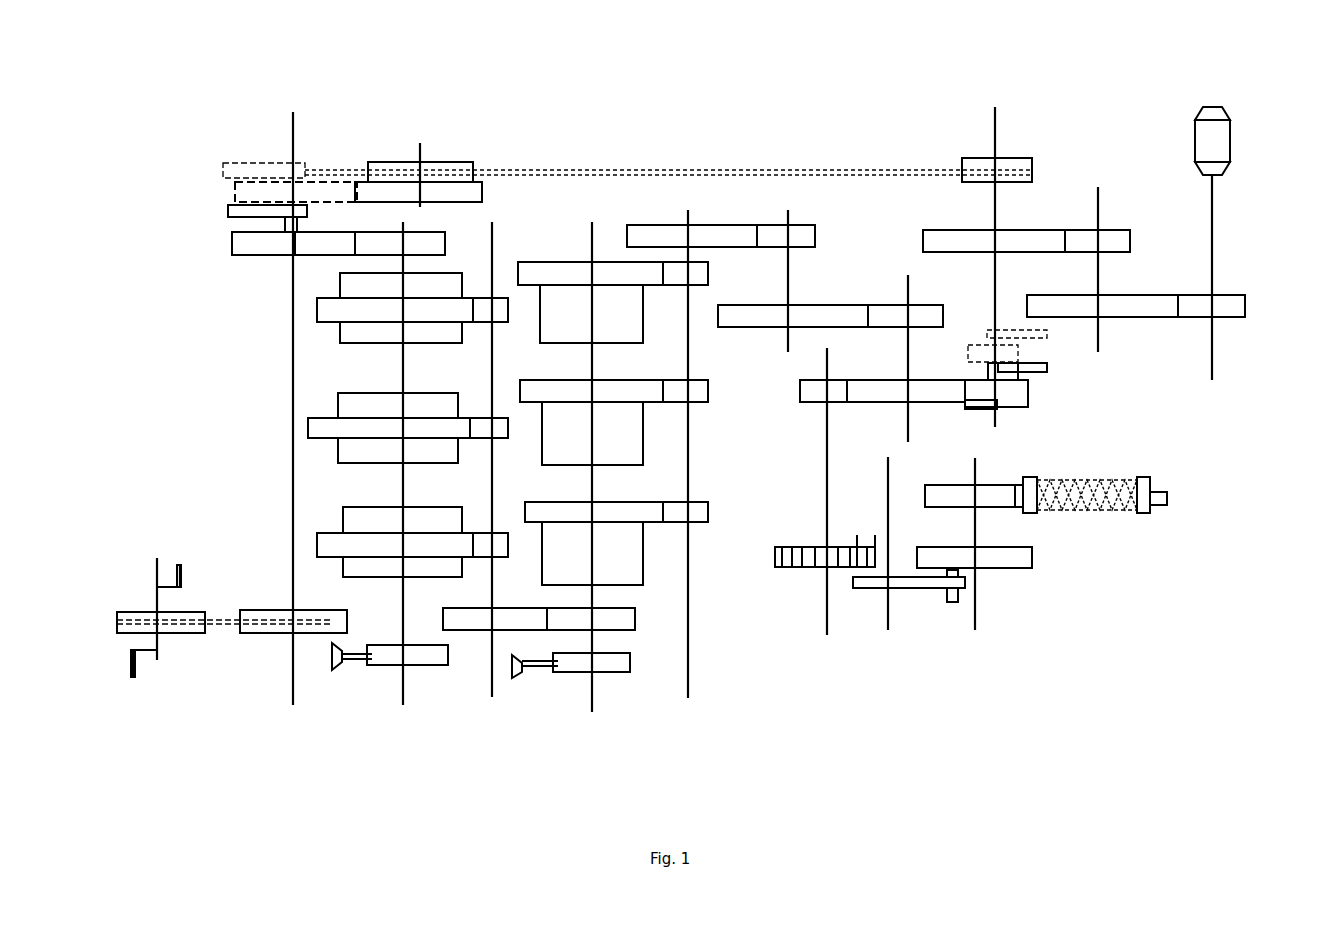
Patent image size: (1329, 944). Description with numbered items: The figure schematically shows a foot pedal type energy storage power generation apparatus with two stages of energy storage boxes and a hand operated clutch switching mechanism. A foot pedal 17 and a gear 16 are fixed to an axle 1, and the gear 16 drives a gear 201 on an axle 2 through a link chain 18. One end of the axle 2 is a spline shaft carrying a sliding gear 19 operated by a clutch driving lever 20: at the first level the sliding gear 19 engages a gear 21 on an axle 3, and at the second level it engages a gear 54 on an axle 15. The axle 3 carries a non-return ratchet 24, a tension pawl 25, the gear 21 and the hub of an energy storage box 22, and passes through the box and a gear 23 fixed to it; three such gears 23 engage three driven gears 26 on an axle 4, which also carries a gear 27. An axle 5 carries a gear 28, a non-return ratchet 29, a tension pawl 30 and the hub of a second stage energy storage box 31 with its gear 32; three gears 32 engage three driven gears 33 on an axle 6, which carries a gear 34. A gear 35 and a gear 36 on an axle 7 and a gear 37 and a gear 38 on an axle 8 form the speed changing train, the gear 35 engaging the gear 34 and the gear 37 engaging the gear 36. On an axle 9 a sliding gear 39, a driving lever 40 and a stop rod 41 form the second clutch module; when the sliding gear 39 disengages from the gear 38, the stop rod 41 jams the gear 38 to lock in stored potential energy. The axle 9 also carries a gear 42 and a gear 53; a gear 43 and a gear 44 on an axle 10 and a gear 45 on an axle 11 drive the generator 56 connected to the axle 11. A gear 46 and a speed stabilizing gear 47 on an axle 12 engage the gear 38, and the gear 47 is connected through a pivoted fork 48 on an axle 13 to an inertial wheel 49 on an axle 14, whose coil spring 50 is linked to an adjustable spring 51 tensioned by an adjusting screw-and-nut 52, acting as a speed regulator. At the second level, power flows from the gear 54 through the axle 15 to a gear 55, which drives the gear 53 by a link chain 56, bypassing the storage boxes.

The axle 1 is at (155, 660).
The axle 2 is at (293, 705).
The axle 3 is at (402, 705).
The axle 4 is at (493, 682).
The axle 5 is at (595, 697).
The axle 6 is at (690, 672).
The axle 7 is at (786, 232).
The axle 8 is at (908, 273).
The axle 9 is at (998, 123).
The axle 10 is at (1098, 187).
The axle 11 is at (1212, 240).
The axle 12 is at (827, 635).
The axle 13 is at (888, 630).
The axle 14 is at (975, 630).
The axle 15 is at (420, 140).
The gear 16 is at (127, 622).
The foot pedal 17 is at (134, 667).
The link chain 18 is at (217, 623).
The sliding gear 19 is at (260, 245).
The clutch driving lever 20 is at (233, 210).
The gear 21 is at (370, 232).
The energy storage box 22 is at (357, 333).
The gear 23 is at (318, 312).
The non-return ratchet 24 is at (390, 653).
The tension pawl 25 is at (335, 670).
The driven gear 26 is at (502, 303).
The gear 27 is at (475, 620).
The gear 28 is at (623, 620).
The non-return ratchet 29 is at (575, 665).
The tension pawl 30 is at (517, 677).
The energy storage box 31 is at (568, 310).
The gear 32 is at (545, 273).
The driven gear 33 is at (695, 275).
The gear 34 is at (655, 237).
The gear 35 is at (778, 237).
The gear 36 is at (738, 317).
The gear 37 is at (897, 313).
The gear 38 is at (887, 392).
The sliding gear 39 is at (1003, 392).
The driving lever 40 is at (1047, 372).
The stop rod 41 is at (990, 410).
The gear 42 is at (1040, 240).
The gear 43 is at (1113, 240).
The gear 44 is at (1143, 307).
The gear 45 is at (1228, 303).
The gear 46 is at (808, 392).
The speed stabilizing gear 47 is at (812, 555).
The pivoted fork 48 is at (868, 582).
The inertial wheel 49 is at (1017, 555).
The coil spring 50 is at (938, 495).
The adjustable spring 51 is at (1060, 513).
The adjusting screw-and-nut 52 is at (1143, 513).
The gear 53 is at (975, 170).
The gear 54 is at (363, 193).
The gear 55 is at (402, 168).
The generator / link chain 56 is at (498, 170).
The gear 201 is at (263, 610).